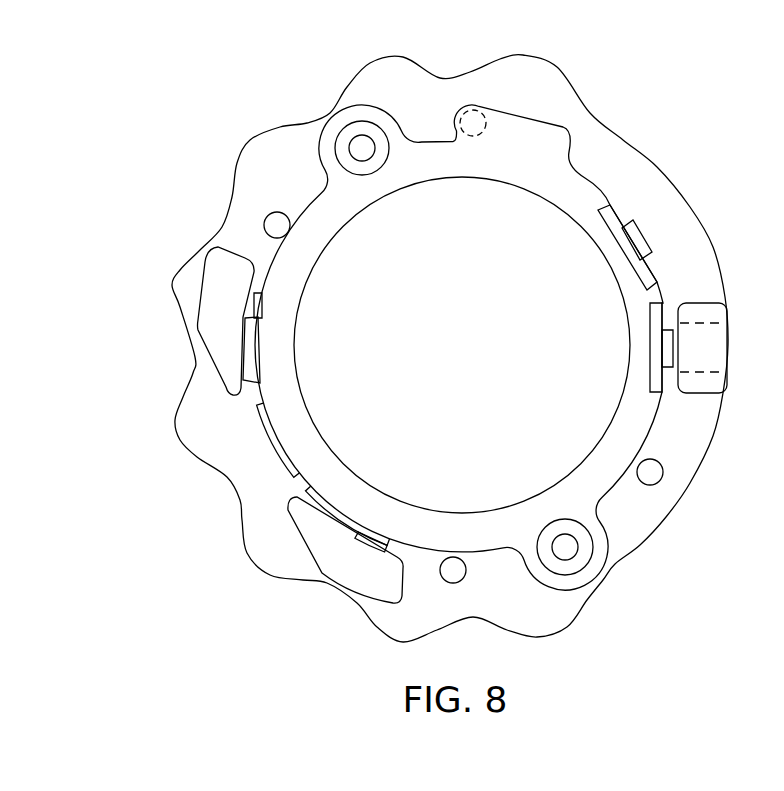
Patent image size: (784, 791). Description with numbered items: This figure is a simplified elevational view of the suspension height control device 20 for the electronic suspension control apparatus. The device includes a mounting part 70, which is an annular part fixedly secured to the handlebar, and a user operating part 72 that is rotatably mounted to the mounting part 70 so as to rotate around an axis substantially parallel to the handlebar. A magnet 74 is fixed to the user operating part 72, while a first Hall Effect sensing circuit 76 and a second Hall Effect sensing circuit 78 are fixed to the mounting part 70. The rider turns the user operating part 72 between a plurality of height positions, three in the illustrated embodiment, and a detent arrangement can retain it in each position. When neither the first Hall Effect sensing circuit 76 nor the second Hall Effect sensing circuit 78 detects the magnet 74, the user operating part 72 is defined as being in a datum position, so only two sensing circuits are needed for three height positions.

The suspension height control device 20 is at (293, 61).
The mounting part 70 is at (580, 196).
The user operating part 72 is at (660, 166).
The magnet 74 is at (703, 345).
The first Hall Effect sensing circuit 76 is at (667, 349).
The second Hall Effect sensing circuit 78 is at (637, 237).